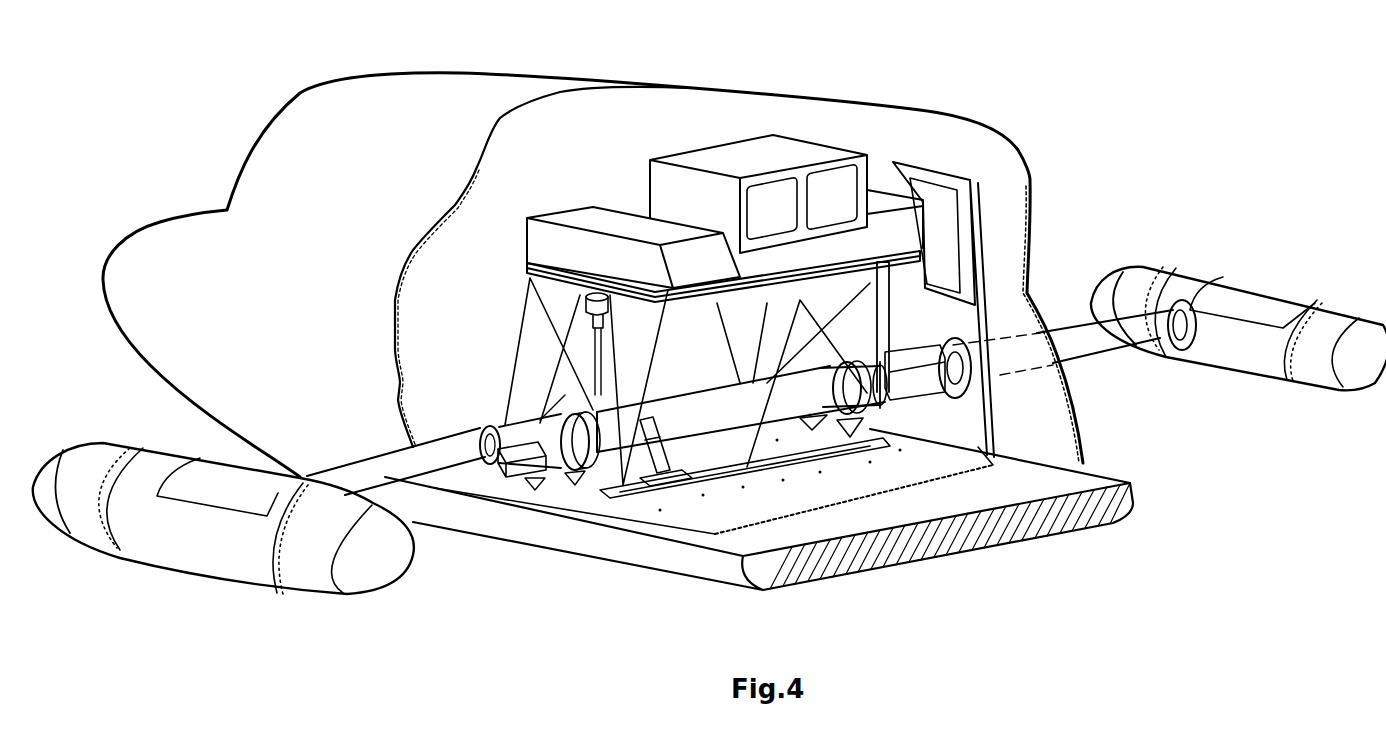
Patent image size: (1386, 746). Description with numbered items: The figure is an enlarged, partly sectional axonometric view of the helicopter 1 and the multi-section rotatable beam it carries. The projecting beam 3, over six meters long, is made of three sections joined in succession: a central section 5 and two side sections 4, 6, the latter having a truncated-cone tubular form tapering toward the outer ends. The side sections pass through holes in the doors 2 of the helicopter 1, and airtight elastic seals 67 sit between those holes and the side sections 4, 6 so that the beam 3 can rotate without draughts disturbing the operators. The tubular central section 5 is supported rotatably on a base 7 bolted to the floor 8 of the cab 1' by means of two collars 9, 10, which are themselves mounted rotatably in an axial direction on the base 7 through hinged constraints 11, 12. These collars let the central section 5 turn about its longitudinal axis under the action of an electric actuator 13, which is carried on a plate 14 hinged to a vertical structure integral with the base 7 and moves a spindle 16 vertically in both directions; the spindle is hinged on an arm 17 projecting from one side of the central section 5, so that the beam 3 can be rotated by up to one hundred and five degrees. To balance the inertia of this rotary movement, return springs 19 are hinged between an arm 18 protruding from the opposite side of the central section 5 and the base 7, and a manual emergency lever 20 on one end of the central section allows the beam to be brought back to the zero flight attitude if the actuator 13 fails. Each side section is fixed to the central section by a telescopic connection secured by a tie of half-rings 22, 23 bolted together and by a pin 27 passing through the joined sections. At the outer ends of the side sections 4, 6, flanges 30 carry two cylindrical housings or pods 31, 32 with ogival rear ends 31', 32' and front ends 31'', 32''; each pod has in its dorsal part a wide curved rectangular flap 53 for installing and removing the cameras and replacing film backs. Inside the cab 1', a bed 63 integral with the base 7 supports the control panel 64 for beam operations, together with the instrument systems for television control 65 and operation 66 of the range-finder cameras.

The helicopter 1 is at (593, 257).
The cab 1' is at (594, 239).
The doors 2 is at (979, 246).
The projecting beam 3 is at (1104, 365).
The side section 4 is at (357, 475).
The central section 5 is at (717, 402).
The side section 6 is at (1083, 340).
The base 7 is at (947, 473).
The floor 8 is at (687, 538).
The collar 9 is at (584, 452).
The collar 10 is at (823, 387).
The hinged constraint 11 is at (533, 506).
The hinged constraint 12 is at (820, 430).
The electric motor (actuator) 13 is at (605, 322).
The plate 14 is at (585, 292).
The spindle 16 is at (585, 400).
The arm 17 is at (540, 420).
The lever 18 is at (648, 418).
The return springs 19 is at (667, 453).
The manual emergency lever 20 is at (892, 322).
The half-ring 22 is at (503, 430).
The half-ring 23 is at (497, 485).
The pin 27 is at (537, 413).
The flanges 30 is at (1187, 343).
The cylindrical housing or pod 31 is at (223, 532).
The ogival rear end 31' is at (378, 573).
The ogival front end 31'' is at (86, 464).
The cylindrical housing or pod 32 is at (1238, 347).
The ogival rear end 32' is at (1354, 377).
The ogival front end 32'' is at (1111, 287).
The curved rectangular flap 53 is at (217, 470).
The bed 63 is at (528, 265).
The control panel 64 is at (577, 217).
The television control instrument system 65 is at (742, 112).
The operation instrument system 66 is at (877, 193).
The elastic seals 67 is at (962, 343).